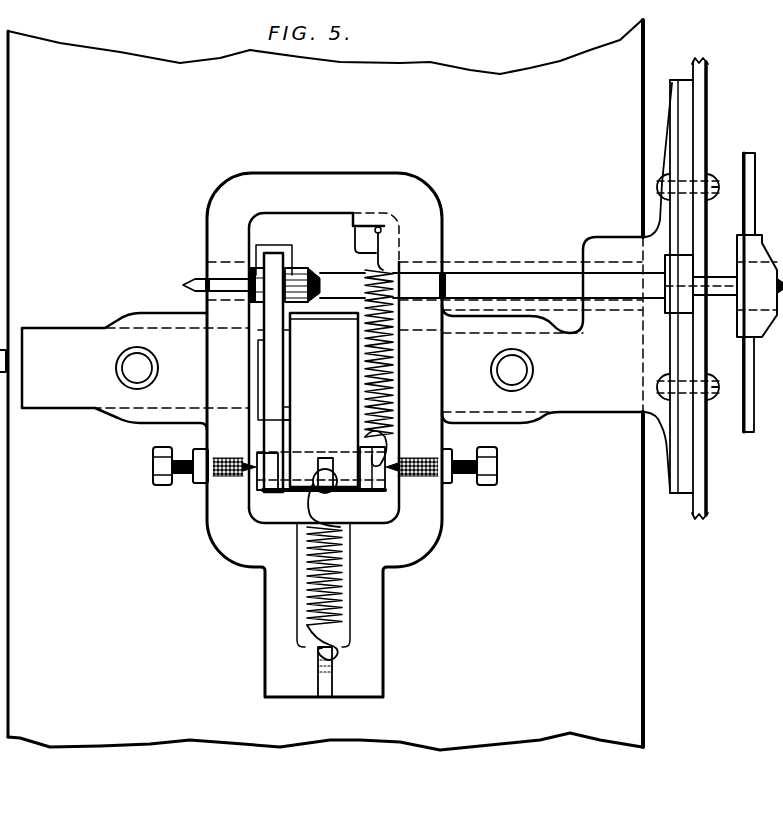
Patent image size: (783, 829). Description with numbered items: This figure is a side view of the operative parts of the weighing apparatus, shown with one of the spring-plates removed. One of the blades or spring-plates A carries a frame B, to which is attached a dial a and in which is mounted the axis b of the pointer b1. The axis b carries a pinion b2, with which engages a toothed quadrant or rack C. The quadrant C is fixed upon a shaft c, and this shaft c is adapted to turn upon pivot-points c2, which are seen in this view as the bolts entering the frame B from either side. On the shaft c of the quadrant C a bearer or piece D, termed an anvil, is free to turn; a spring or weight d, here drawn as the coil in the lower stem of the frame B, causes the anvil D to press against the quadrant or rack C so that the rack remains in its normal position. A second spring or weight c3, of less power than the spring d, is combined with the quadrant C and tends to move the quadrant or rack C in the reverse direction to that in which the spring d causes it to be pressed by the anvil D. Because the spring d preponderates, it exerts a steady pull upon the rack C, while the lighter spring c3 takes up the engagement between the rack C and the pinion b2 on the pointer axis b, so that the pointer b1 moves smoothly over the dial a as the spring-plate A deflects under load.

The blade or spring-plate A is at (321, 385).
The frame B is at (332, 421).
The dial a is at (708, 116).
The axis of the pointer b is at (483, 275).
The pointer b1 is at (755, 200).
The pinion b2 is at (292, 274).
The toothed quadrant or rack C is at (274, 368).
The bearer or anvil D is at (257, 366).
The shaft c is at (286, 493).
The pivot-points c2 is at (250, 480).
The spring or weight c3 is at (396, 366).
The spring or weight d is at (348, 567).